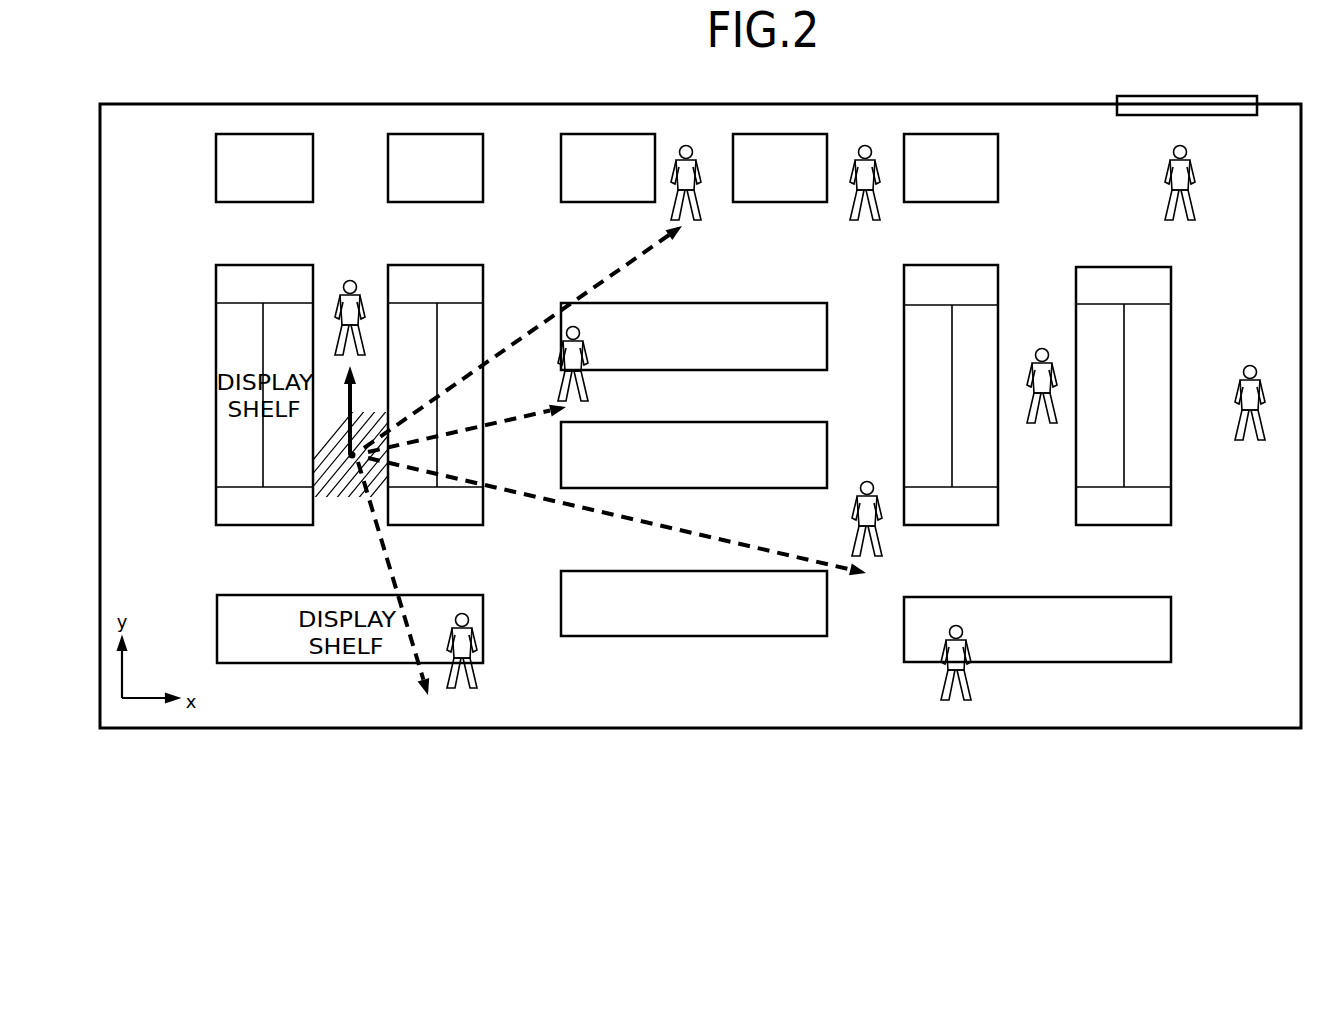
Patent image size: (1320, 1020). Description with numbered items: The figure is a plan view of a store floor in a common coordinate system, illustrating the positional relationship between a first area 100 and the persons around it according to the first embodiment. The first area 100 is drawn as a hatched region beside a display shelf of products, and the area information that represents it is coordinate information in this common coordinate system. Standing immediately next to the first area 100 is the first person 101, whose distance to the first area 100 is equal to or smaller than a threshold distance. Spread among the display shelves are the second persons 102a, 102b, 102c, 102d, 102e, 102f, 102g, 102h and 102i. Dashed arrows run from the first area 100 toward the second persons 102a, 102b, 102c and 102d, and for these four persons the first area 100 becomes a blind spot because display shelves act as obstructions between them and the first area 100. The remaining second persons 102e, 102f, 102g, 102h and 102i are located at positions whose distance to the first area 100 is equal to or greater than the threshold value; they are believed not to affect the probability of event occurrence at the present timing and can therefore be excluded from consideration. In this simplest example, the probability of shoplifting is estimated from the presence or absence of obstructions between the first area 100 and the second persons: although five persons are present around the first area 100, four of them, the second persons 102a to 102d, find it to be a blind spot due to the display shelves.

The first area 100 is at (337, 498).
The first person 101 is at (350, 280).
The second person 102a is at (474, 688).
The second person 102b is at (585, 392).
The second person 102c is at (698, 210).
The second person 102d is at (879, 547).
The second person 102e is at (877, 210).
The second person 102f is at (968, 682).
The second person 102g is at (1046, 428).
The second person 102h is at (1254, 442).
The second person 102i is at (1192, 210).